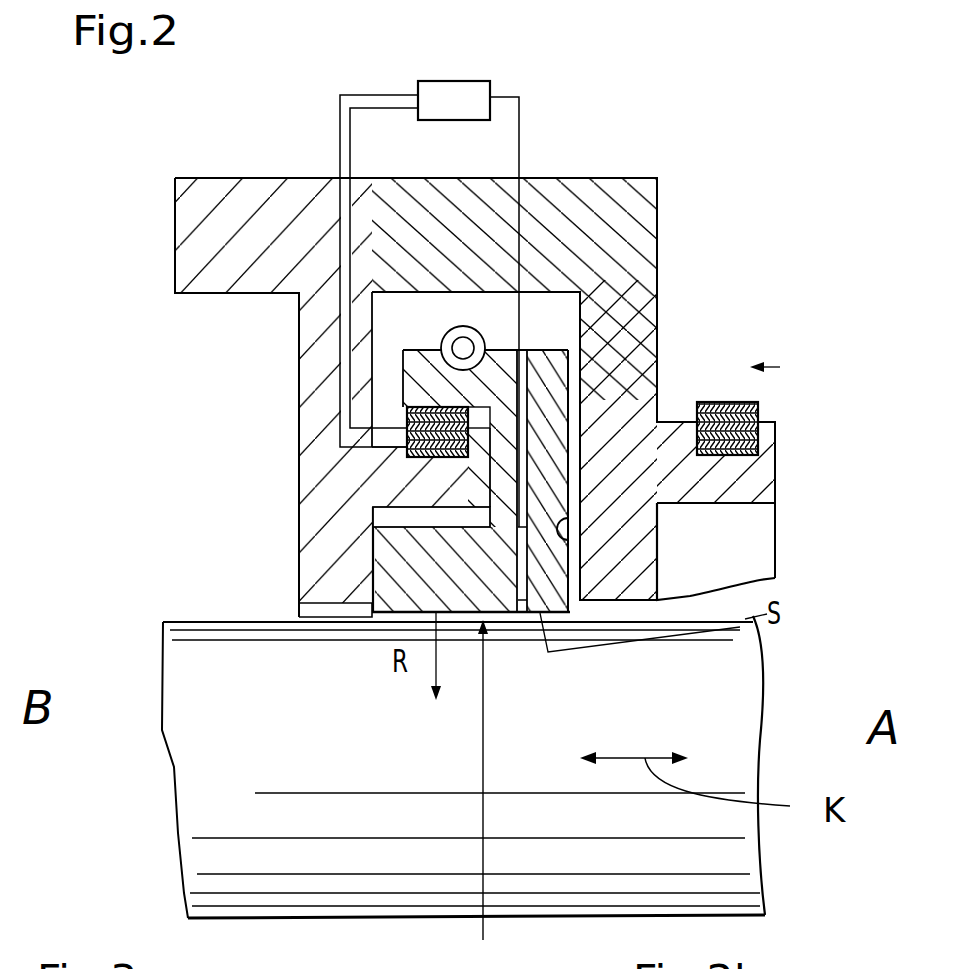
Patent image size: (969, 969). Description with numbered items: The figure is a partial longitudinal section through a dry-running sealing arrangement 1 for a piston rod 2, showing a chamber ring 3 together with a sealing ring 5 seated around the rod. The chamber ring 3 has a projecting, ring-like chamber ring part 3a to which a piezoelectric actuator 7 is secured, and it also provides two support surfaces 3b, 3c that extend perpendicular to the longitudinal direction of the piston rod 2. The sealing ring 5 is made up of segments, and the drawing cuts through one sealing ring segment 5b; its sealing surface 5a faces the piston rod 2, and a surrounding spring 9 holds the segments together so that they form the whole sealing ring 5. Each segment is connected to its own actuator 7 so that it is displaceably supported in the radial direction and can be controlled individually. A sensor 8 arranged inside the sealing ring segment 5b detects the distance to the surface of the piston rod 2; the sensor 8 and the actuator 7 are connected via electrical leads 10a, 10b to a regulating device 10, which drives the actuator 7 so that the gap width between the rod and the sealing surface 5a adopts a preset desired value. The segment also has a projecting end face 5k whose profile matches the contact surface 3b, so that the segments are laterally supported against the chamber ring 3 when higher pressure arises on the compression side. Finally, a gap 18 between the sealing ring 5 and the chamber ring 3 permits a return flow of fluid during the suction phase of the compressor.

The dry-running sealing arrangement 1 is at (226, 128).
The piston rod 2 is at (750, 702).
The chamber ring 3 is at (640, 210).
The chamber ring part 3a is at (758, 465).
The support surface 3b is at (388, 518).
The support surface 3c is at (575, 526).
The sealing ring 5 is at (585, 385).
The sealing surface 5a is at (609, 790).
The sealing ring segment 5b is at (583, 400).
The end face 5k is at (360, 548).
The piezoelectric actuator 7 is at (413, 437).
The sensor 8 is at (520, 575).
The spring 9 is at (445, 340).
The regulating device 10 is at (470, 87).
The electrical leads 10a is at (518, 153).
The lead wires 10b is at (350, 151).
The gap 18 is at (572, 388).